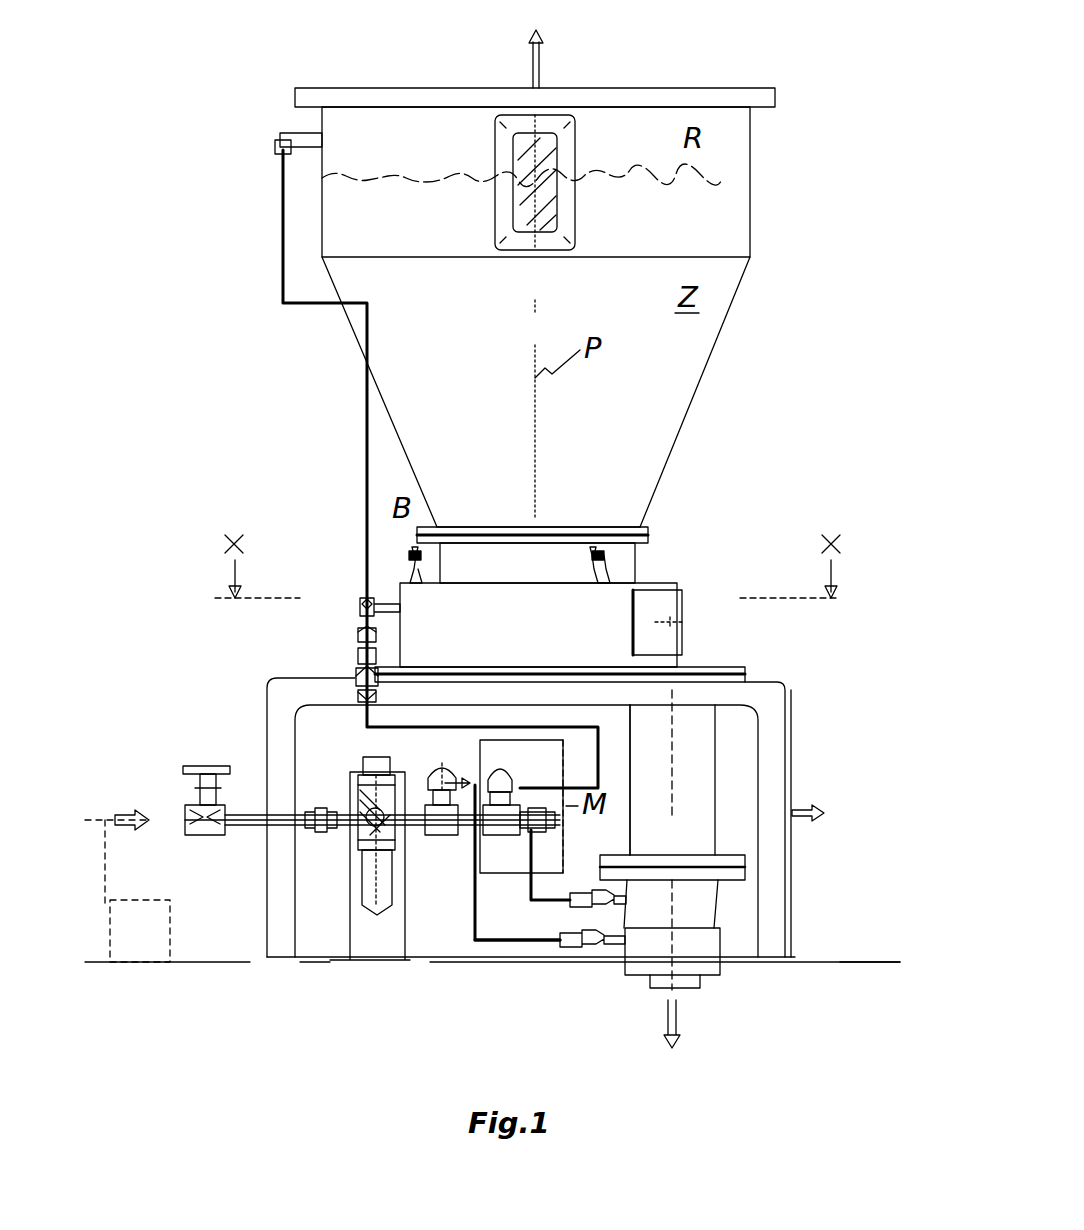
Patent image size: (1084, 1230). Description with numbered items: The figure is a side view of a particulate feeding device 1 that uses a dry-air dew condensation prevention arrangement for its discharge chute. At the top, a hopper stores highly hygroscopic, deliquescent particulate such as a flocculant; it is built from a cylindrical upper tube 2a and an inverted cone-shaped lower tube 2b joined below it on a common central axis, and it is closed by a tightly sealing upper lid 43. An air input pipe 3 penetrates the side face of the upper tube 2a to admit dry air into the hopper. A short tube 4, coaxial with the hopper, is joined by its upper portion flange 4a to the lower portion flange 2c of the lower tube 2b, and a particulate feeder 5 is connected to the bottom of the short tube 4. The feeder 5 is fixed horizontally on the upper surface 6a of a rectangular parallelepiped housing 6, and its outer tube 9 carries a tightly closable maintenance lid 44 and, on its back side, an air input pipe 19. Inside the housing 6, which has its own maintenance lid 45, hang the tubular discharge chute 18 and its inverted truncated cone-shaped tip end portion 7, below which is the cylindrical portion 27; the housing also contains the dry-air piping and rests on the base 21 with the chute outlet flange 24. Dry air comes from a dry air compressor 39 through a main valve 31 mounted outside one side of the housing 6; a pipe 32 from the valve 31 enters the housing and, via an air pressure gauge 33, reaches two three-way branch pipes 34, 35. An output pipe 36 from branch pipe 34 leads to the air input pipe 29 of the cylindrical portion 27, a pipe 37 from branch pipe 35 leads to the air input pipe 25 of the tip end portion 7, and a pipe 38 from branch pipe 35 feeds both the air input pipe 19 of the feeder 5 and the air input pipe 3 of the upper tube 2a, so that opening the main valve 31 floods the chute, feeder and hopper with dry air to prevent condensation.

The particulate feeding device 1 is at (818, 380).
The upper tube 2a is at (745, 219).
The lower tube 2b is at (694, 397).
The lower portion flange 2c is at (575, 494).
The air input pipe 3 is at (300, 142).
The short tube 4 is at (634, 561).
The upper portion flange 4a is at (660, 546).
The particulate feeder 5 is at (583, 640).
The housing 6 is at (786, 746).
The upper surface 6a is at (762, 678).
The tip end portion 7 is at (742, 912).
The outer tube 9 is at (360, 635).
The discharge chute 18 is at (700, 752).
The air input pipe 19 is at (376, 598).
The base 21 is at (868, 958).
The outlet flange 24 is at (720, 895).
The air input pipe 25 is at (600, 904).
The cylindrical portion 27 is at (718, 950).
The air input pipe 29 is at (602, 946).
The main valve 31 is at (205, 765).
The pipe 32 is at (243, 832).
The air pressure gauge 33 is at (362, 822).
The three-way branch pipe 34 is at (437, 832).
The three-way branch pipe 35 is at (502, 840).
The output pipe 36 is at (492, 945).
The pipe 37 is at (536, 862).
The pipe 38 is at (367, 441).
The dry air compressor 39 is at (175, 945).
The upper lid 43 is at (670, 88).
The maintenance lid 44 is at (685, 648).
The maintenance lid 45 is at (799, 768).